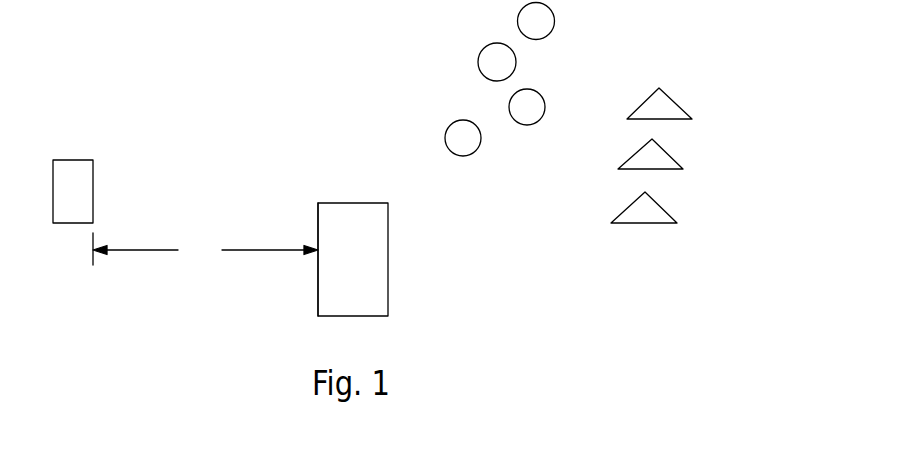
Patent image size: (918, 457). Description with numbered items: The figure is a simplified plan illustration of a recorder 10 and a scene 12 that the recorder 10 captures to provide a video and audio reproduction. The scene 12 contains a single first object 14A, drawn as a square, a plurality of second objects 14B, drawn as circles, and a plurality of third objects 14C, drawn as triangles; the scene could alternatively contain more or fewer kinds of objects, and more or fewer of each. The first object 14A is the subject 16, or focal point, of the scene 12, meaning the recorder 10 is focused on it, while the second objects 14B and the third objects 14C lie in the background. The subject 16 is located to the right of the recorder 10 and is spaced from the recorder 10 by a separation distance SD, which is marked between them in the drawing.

The recorder 10 is at (80, 148).
The scene 12 is at (210, 199).
The separation distance SD is at (205, 249).
The first object 14A is at (372, 285).
The subject 16 is at (310, 193).
The second objects 14B is at (503, 63).
The third objects 14C is at (652, 214).